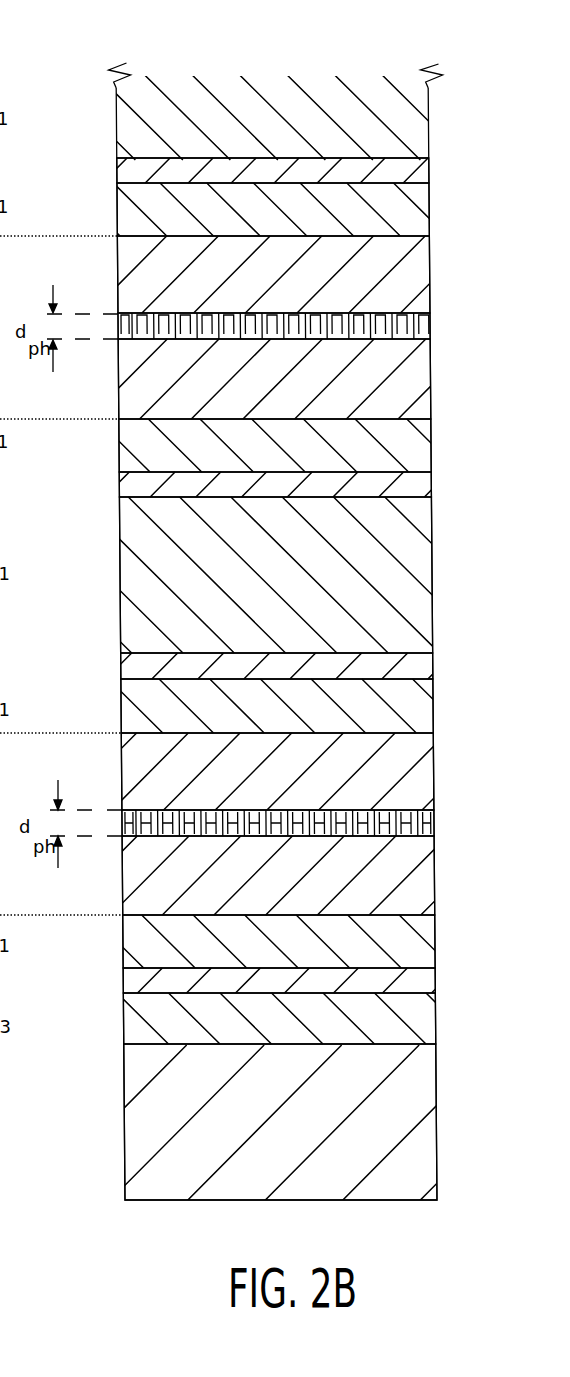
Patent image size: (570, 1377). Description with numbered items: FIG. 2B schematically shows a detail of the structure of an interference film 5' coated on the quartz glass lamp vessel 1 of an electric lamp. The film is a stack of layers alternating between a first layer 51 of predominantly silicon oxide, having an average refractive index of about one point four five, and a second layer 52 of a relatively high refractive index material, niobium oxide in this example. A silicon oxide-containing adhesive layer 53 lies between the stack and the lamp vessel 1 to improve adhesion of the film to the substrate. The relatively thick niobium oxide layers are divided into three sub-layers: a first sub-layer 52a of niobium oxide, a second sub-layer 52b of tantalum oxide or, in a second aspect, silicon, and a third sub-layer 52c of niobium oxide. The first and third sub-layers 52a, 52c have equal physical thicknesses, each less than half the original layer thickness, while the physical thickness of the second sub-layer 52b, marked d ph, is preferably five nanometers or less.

The interference film 5' is at (279, 600).
The first layer 51 is at (445, 953).
The second layer 52 is at (137, 983).
The first sub-layer 52a is at (145, 889).
The second sub-layer 52b is at (447, 823).
The third sub-layer 52c is at (137, 752).
The adhesive layer 53 is at (410, 1020).
The lamp vessel 1 is at (140, 1117).